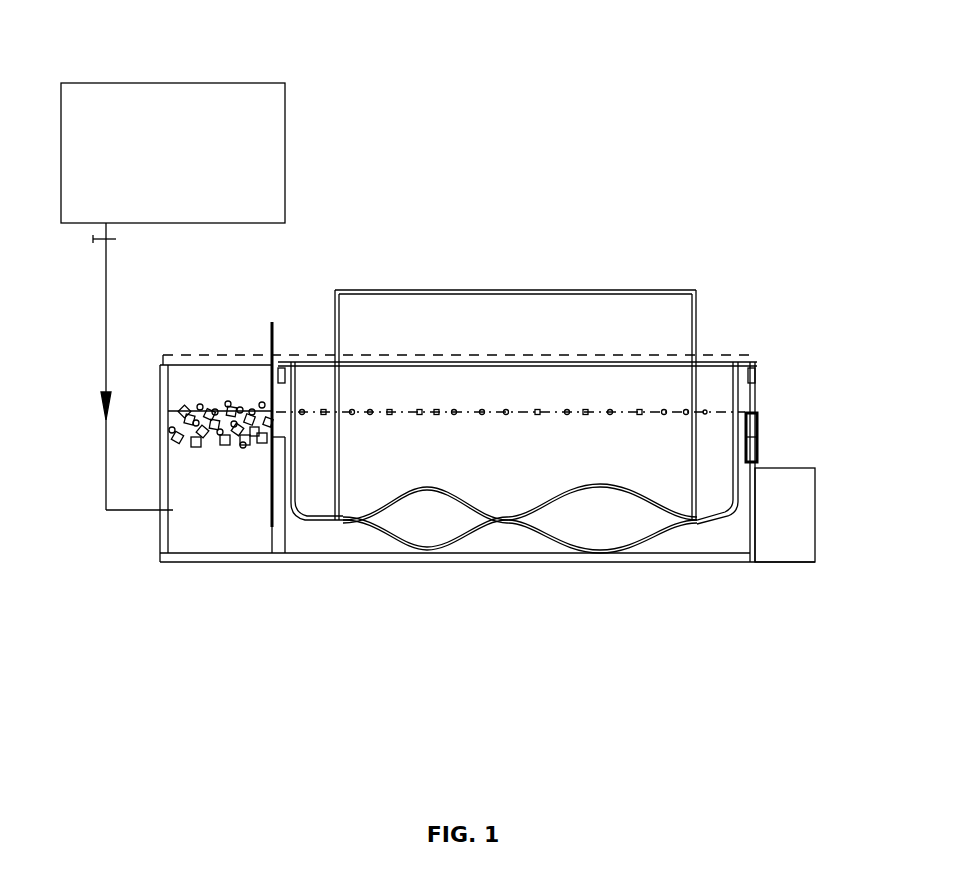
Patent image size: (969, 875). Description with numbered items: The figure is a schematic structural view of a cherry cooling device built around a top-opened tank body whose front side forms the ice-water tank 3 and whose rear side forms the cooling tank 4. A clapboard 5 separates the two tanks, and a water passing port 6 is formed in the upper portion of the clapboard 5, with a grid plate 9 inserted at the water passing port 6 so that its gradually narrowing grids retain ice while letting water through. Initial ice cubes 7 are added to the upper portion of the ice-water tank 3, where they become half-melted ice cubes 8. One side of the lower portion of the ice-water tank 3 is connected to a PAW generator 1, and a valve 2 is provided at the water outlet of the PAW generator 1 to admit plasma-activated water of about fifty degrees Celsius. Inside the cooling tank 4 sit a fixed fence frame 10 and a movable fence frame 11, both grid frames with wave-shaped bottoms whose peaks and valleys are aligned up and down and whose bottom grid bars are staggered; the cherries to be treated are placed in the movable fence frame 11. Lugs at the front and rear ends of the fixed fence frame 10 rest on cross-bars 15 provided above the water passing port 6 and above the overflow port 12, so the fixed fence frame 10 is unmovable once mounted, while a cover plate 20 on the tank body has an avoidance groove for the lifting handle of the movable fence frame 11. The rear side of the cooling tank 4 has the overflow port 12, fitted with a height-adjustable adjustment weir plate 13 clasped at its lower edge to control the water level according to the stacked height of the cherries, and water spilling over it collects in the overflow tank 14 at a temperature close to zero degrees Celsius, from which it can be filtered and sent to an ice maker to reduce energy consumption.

The PAW generator 1 is at (205, 135).
The valve 2 is at (95, 240).
The ice-water tank 3 is at (208, 502).
The cooling tank 4 is at (512, 553).
The clapboard 5 is at (275, 545).
The water passing port 6 is at (278, 423).
The initial ice cube 7 is at (188, 430).
The half-melted ice cube 8 is at (540, 410).
The grid plate 9 is at (271, 335).
The fixed fence frame 10 is at (718, 513).
The movable fence frame 11 is at (633, 548).
The overflow port 12 is at (753, 395).
The adjustment weir plate 13 is at (760, 420).
The overflow tank 14 is at (788, 503).
The cross-bar 15 is at (282, 380).
The cover plate 20 is at (718, 355).